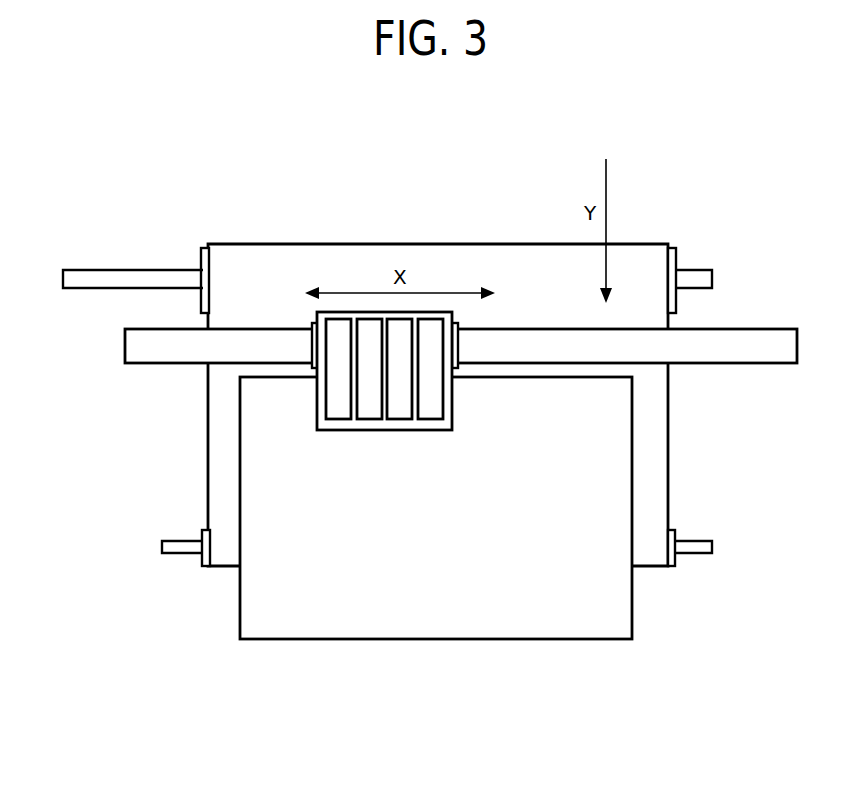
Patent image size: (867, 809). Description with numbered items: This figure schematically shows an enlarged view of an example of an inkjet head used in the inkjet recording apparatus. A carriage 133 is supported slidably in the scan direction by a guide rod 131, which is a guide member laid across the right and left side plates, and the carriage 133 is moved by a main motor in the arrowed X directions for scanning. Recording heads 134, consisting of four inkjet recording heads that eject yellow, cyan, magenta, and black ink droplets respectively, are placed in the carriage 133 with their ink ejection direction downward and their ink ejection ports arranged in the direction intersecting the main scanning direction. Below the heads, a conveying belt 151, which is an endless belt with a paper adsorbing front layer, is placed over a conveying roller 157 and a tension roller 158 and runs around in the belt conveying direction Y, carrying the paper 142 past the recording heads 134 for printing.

The guide rod 131 is at (760, 341).
The carriage 133 is at (328, 429).
The recording heads 134 is at (430, 412).
The paper 142 is at (338, 632).
The conveying belt 151 is at (253, 255).
The conveying roller 157 is at (203, 252).
The tension roller 158 is at (202, 533).